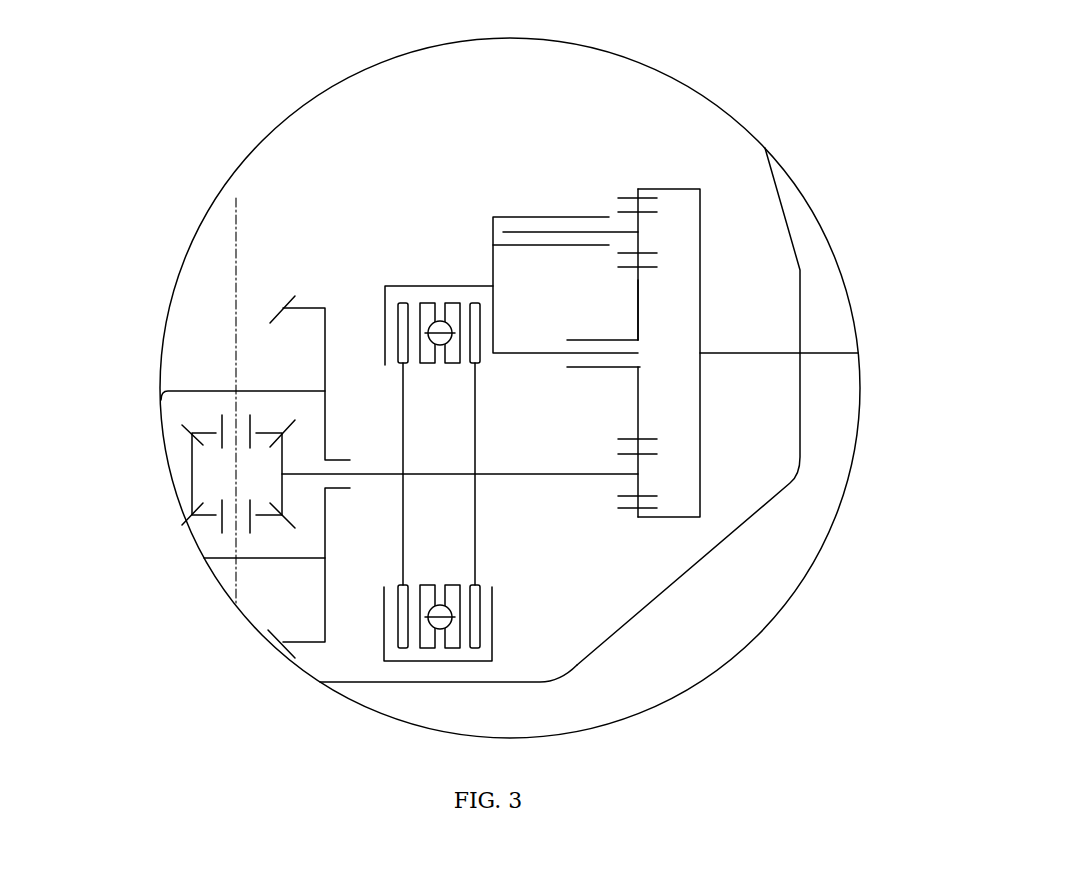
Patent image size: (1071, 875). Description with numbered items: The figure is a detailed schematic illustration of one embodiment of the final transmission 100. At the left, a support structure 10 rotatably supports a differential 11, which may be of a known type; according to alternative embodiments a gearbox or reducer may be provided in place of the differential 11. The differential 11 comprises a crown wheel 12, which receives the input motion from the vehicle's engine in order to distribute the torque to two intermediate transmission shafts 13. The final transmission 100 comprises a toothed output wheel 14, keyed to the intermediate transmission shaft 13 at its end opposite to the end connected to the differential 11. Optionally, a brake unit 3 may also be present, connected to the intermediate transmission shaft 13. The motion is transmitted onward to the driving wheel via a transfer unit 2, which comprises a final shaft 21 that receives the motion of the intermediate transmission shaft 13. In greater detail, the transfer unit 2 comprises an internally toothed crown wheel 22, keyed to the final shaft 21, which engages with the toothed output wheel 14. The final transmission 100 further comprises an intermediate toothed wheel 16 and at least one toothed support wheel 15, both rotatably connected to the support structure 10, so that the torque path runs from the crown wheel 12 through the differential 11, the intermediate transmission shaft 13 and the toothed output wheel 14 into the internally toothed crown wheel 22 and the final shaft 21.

The final transmission 100 is at (323, 152).
The support structure 10 is at (560, 217).
The toothed support wheel 15 is at (639, 243).
The intermediate toothed wheel 16 is at (639, 303).
The internally toothed crown wheel 22 is at (700, 327).
The final shaft 21 is at (755, 353).
The transfer unit 2 is at (727, 413).
The toothed output wheel 14 is at (638, 467).
The brake unit 3 is at (478, 606).
The differential 11 is at (202, 388).
The crown wheel 12 is at (283, 642).
The intermediate transmission shaft 13 is at (188, 476).